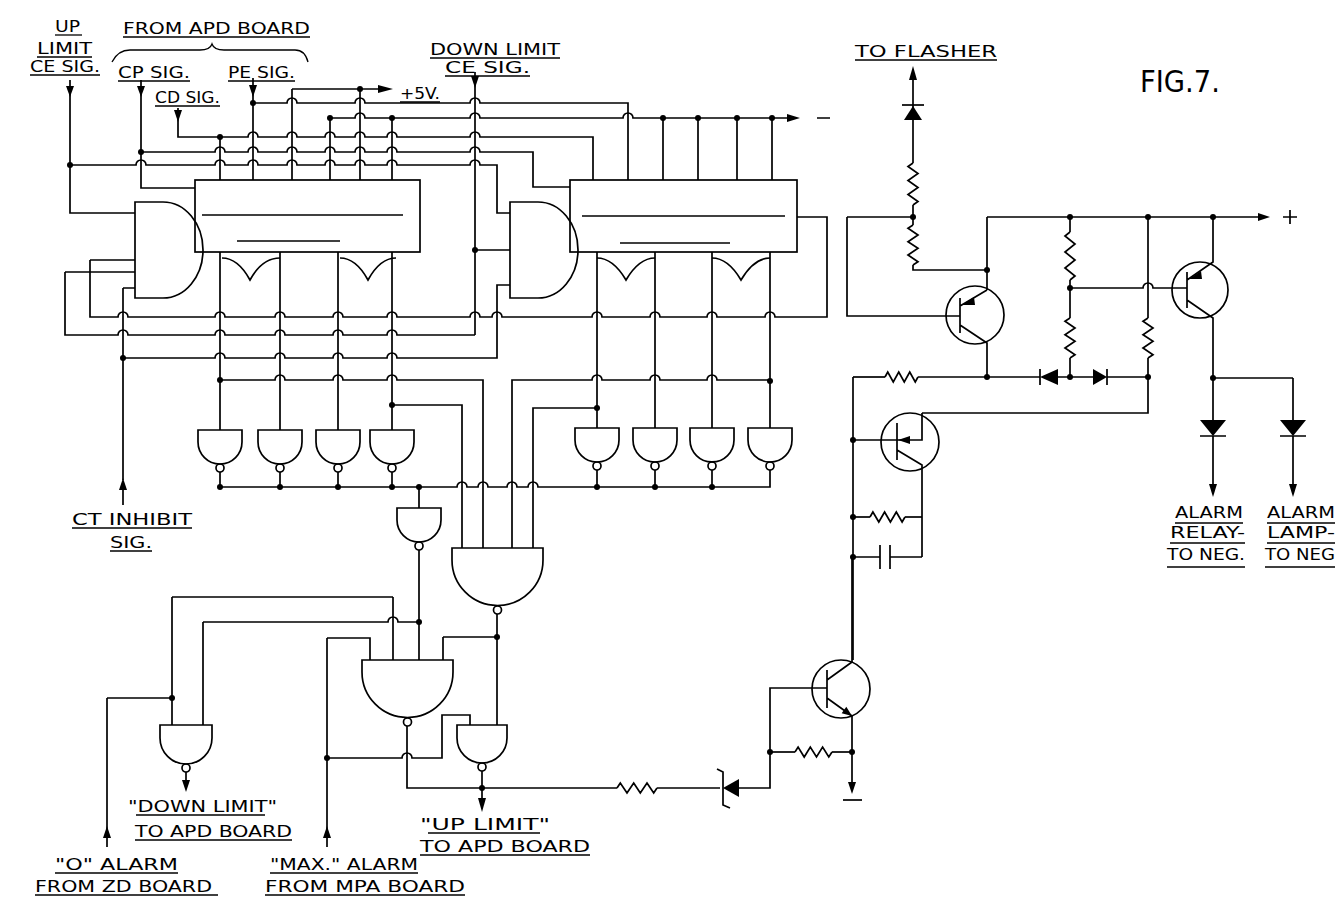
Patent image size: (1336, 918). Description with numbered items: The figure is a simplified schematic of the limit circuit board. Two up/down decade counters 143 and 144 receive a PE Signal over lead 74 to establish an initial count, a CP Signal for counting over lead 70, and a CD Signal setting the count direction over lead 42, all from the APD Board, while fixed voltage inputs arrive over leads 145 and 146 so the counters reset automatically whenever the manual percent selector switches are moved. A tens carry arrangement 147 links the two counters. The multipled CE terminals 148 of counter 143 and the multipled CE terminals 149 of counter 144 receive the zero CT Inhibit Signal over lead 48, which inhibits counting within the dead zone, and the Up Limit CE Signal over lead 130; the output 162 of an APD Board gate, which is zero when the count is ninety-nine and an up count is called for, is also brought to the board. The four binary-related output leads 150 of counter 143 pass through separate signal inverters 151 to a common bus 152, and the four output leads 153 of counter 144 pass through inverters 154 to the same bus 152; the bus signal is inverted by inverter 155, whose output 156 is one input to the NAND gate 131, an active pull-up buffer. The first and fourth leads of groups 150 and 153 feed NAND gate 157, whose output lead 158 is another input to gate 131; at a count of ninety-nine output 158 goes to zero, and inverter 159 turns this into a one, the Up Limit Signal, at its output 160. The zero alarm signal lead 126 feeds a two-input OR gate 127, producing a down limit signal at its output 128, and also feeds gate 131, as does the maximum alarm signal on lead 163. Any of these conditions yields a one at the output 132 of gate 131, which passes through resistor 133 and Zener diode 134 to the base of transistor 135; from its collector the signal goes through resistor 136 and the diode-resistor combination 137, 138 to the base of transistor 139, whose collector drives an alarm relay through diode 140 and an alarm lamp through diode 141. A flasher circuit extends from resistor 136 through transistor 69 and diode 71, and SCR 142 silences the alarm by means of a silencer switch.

The Up Limit CE Signal lead 130 is at (70, 117).
The CP Signal lead 70 is at (141, 117).
The CD Signal lead 42 is at (178, 110).
The PE Signal lead 74 is at (252, 95).
The fixed voltage input lead 145 is at (378, 89).
The output of NAND gate in APD Board 162 is at (480, 78).
The fixed voltage input lead 146 is at (722, 118).
The up/down decade counter 143 is at (420, 215).
The up/down decade counter 144 is at (800, 196).
The multipled CE terminals of counter 143 148 is at (202, 280).
The multipled CE terminals of counter 144 149 is at (580, 272).
The binary-related output leads of counter 143 150 is at (308, 341).
The binary-related output leads of counter 144 153 is at (683, 340).
The tens carry arrangement 147 is at (818, 320).
The CT Inhibit Signal lead 48 is at (123, 448).
The signal inverters 151 is at (404, 454).
The signal inverters 154 is at (782, 452).
The common bus 152 is at (418, 482).
The signal inverter 155 is at (431, 532).
The output of inverter 155 156 is at (418, 563).
The NAND gate 157 is at (545, 582).
The output lead of gate 157 158 is at (502, 625).
The active pull-up buffer NAND gate 131 is at (380, 685).
The output of gate 131 132 is at (407, 748).
The signal inverter (OR gate) 159 is at (507, 738).
The inverter output 160 is at (487, 776).
The two-input OR gate 127 is at (212, 740).
The output of gate 127 128 is at (190, 776).
The zero alarm signal lead 126 is at (107, 780).
The maximum alarm signal lead 163 is at (330, 815).
The resistor 133 is at (645, 760).
The Zener diode 134 is at (738, 750).
The transistor 135 is at (872, 686).
The resistor 136 is at (898, 370).
The diode 137 is at (1038, 372).
The resistor 138 is at (1075, 345).
The transistor 139 is at (1230, 287).
The diode 140 is at (1205, 436).
The diode 141 is at (1288, 424).
The SCR 142 is at (940, 443).
The transistor 69 is at (995, 298).
The diode 71 is at (924, 105).